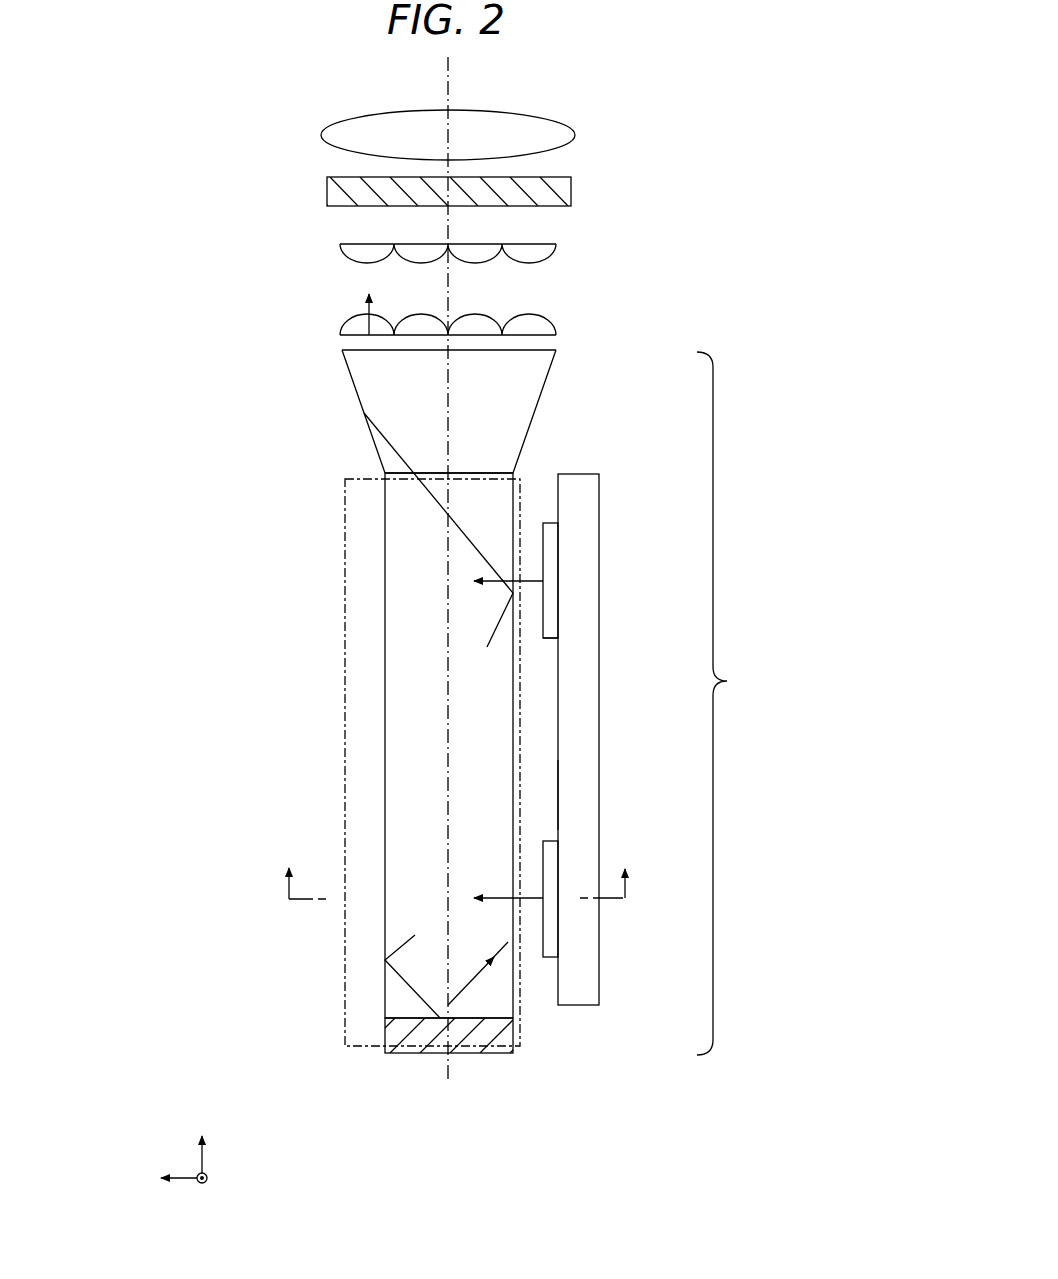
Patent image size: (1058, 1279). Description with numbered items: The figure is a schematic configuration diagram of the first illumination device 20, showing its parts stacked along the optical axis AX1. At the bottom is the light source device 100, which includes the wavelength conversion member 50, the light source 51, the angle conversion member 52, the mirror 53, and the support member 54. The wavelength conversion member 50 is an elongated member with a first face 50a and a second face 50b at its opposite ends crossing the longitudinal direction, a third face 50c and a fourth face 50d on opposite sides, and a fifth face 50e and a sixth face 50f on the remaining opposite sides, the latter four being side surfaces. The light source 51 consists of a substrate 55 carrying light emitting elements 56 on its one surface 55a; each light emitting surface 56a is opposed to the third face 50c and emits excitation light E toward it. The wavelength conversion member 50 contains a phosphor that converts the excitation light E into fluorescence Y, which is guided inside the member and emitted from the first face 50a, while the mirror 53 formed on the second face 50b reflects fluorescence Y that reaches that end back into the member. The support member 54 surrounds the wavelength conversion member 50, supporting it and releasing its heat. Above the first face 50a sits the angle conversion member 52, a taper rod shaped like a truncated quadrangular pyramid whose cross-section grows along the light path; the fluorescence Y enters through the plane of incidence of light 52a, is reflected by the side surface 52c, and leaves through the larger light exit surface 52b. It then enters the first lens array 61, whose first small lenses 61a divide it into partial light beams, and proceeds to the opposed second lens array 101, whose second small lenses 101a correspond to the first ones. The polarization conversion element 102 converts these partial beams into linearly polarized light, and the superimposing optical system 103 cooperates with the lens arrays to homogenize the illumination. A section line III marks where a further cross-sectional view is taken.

The first illumination device 20 is at (712, 138).
The light source device 100 is at (500, 693).
The superimposing optical system 103 is at (555, 128).
The polarization conversion element 102 is at (565, 192).
The second lens array 101 is at (560, 257).
The second small lenses 101a is at (362, 256).
The first lens array 61 is at (560, 320).
The first small lenses 61a is at (358, 322).
The angle conversion member 52 is at (535, 362).
The plane of incidence of light 52a is at (437, 475).
The light exit surface 52b is at (360, 350).
The side surface 52c is at (350, 385).
The wavelength conversion member 50 is at (498, 828).
The first face 50a is at (398, 472).
The second face 50b is at (500, 1020).
The third face 50c is at (516, 757).
The fourth face 50d is at (385, 815).
The fifth face 50e is at (392, 621).
The sixth face 50f is at (393, 682).
The light source 51 is at (601, 706).
The mirror 53 is at (395, 1040).
The support member 54 is at (355, 565).
The substrate 55 is at (580, 720).
The one surface 55a is at (558, 777).
The light emitting elements 56 is at (550, 605).
The light emitting surface 56a is at (542, 632).
The excitation light E is at (525, 580).
The fluorescence Y is at (472, 543).
The section line III- III is at (452, 895).
The optical axis AX1 is at (450, 1072).